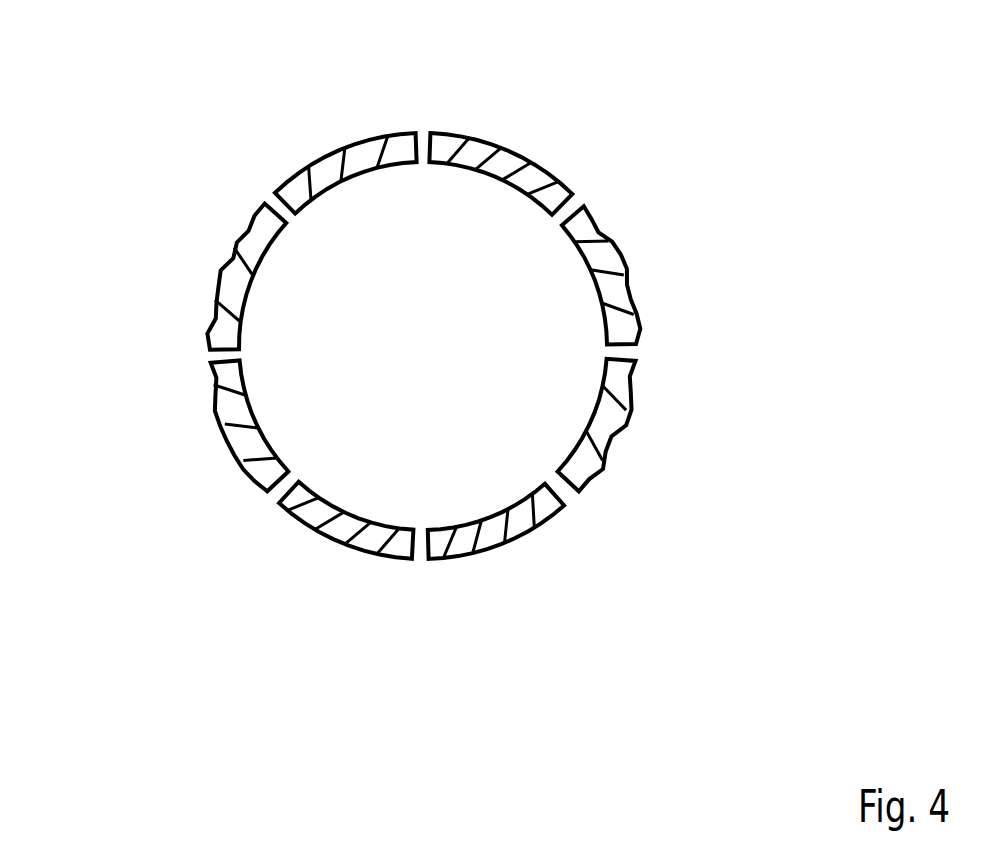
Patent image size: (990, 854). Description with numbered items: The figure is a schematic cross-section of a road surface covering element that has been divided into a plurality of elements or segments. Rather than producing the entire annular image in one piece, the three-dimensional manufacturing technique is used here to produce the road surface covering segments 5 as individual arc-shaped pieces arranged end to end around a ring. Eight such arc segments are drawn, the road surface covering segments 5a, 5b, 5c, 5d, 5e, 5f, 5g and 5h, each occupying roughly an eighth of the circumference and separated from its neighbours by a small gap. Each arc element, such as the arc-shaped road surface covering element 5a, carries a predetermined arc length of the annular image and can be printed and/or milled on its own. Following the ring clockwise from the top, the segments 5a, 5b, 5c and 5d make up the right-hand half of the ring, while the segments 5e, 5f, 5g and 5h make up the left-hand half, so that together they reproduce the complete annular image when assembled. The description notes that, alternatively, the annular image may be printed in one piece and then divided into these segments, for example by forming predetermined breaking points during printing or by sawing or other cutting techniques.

The road surface covering segment 5 is at (457, 133).
The road surface covering segment 5a is at (533, 180).
The road surface covering segment 5b is at (617, 298).
The road surface covering segment 5c is at (603, 430).
The road surface covering segment 5d is at (513, 527).
The road surface covering segment 5e is at (347, 530).
The road surface covering segment 5f is at (253, 438).
The road surface covering segment 5g is at (237, 288).
The road surface covering segment 5h is at (357, 148).